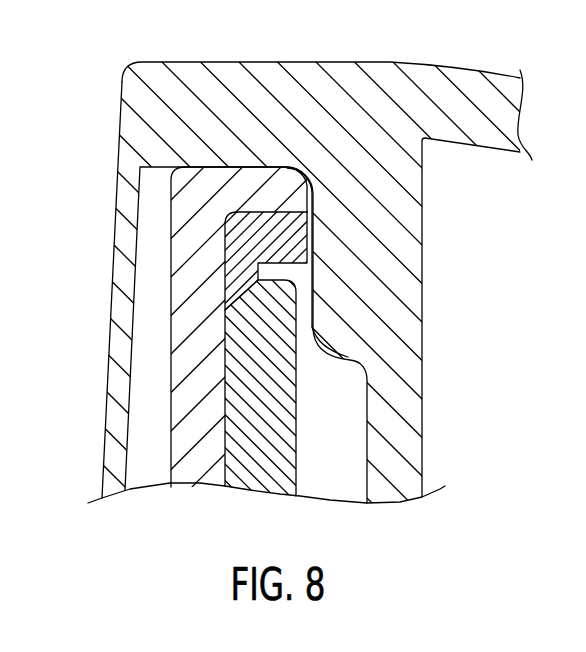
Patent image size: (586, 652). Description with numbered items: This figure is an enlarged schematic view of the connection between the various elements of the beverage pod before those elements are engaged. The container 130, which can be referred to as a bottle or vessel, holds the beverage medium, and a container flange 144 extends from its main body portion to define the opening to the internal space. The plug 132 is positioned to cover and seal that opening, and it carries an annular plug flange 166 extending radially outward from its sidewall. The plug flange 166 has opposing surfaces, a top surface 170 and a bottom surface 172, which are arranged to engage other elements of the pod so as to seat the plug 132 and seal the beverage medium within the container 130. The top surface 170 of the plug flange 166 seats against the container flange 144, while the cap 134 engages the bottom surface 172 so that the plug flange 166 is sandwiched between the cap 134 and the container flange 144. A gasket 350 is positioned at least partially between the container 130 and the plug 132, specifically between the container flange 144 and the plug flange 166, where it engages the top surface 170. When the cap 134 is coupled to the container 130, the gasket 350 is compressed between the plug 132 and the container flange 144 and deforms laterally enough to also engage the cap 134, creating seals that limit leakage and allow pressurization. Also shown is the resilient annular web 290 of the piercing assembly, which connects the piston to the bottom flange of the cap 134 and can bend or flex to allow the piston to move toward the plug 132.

The cap 134 is at (293, 283).
The web 290 is at (113, 302).
The plug 132 is at (293, 254).
The bottom surface 172 is at (236, 165).
The plug flange 166 is at (256, 231).
The gasket 350 is at (250, 238).
The top surface 170 is at (272, 207).
The container 130 is at (258, 411).
The container flange 144 is at (292, 443).